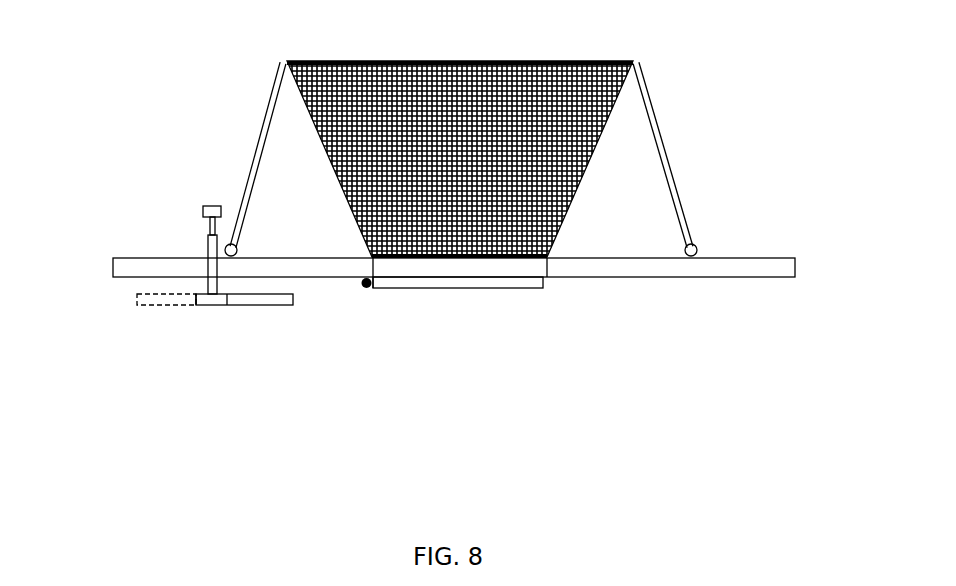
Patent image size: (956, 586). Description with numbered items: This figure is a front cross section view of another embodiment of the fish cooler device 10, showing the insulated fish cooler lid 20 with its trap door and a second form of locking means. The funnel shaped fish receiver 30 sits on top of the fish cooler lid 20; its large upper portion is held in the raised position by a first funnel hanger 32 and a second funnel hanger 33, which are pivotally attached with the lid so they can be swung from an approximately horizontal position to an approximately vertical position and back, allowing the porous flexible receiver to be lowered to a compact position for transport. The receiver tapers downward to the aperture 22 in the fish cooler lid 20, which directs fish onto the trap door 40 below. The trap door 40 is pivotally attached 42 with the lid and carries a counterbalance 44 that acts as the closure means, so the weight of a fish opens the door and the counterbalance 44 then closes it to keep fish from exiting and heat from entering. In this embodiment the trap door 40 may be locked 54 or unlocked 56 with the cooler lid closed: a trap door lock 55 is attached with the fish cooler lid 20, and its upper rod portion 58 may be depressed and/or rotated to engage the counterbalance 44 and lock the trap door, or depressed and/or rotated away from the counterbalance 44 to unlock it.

The fish cooler device 10 is at (789, 214).
The fish cooler lid 20 is at (795, 266).
The aperture 22 is at (377, 261).
The funnel shaped fish receiver 30 is at (591, 82).
The first funnel hanger 32 is at (646, 94).
The second funnel hanger 33 is at (277, 89).
The trap door 40 is at (544, 281).
The pivot attachment 42 is at (373, 285).
The counterbalance 44 is at (366, 287).
The locked position 54 is at (272, 305).
The trap door lock 55 is at (212, 305).
The unlocked position 56 is at (158, 305).
The upper rod portion 58 is at (203, 211).